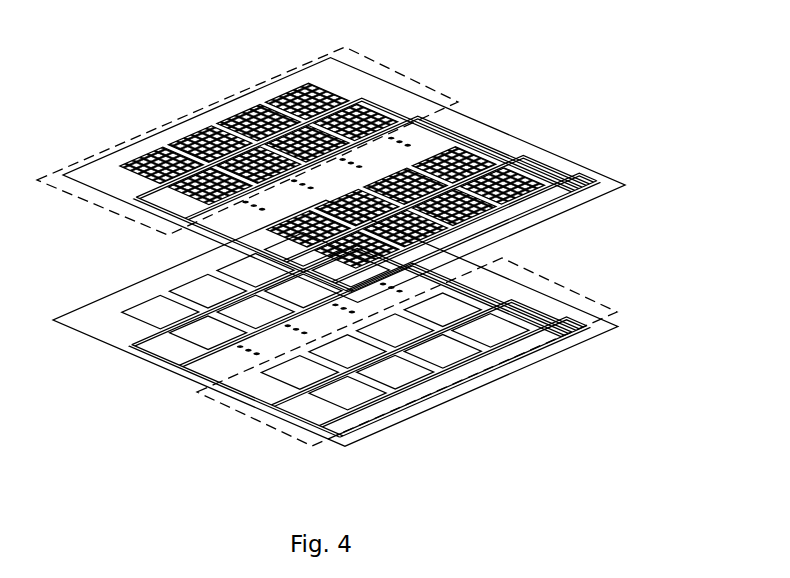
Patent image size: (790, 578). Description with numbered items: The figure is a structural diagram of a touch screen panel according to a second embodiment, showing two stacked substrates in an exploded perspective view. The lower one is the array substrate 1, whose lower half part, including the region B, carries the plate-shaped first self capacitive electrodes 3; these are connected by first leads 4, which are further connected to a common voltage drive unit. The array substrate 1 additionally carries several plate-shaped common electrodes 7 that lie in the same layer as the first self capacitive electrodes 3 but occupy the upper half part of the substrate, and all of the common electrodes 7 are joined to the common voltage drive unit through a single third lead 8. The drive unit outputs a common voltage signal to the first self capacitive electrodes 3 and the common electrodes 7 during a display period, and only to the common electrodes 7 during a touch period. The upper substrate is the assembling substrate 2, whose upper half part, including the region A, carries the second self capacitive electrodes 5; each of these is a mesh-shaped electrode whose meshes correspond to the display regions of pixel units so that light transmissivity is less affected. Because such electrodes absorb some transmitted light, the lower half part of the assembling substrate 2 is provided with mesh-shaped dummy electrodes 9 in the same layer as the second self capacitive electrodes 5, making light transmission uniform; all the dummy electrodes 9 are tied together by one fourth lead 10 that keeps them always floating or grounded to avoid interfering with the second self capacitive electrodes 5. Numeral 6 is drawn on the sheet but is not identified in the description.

The array substrate 1 is at (347, 323).
The assembling substrate 2 is at (340, 163).
The first self capacitive electrodes 3 is at (437, 386).
The first leads 4 is at (474, 382).
The second self capacitive electrodes 5 is at (227, 102).
The touch sensing lead line 6 is at (355, 162).
The common electrodes 7 is at (123, 292).
The third lead 8 is at (205, 391).
The dummy electrodes 9 is at (473, 237).
The fourth lead 10 is at (414, 200).
The region A is at (247, 130).
The region B is at (422, 348).